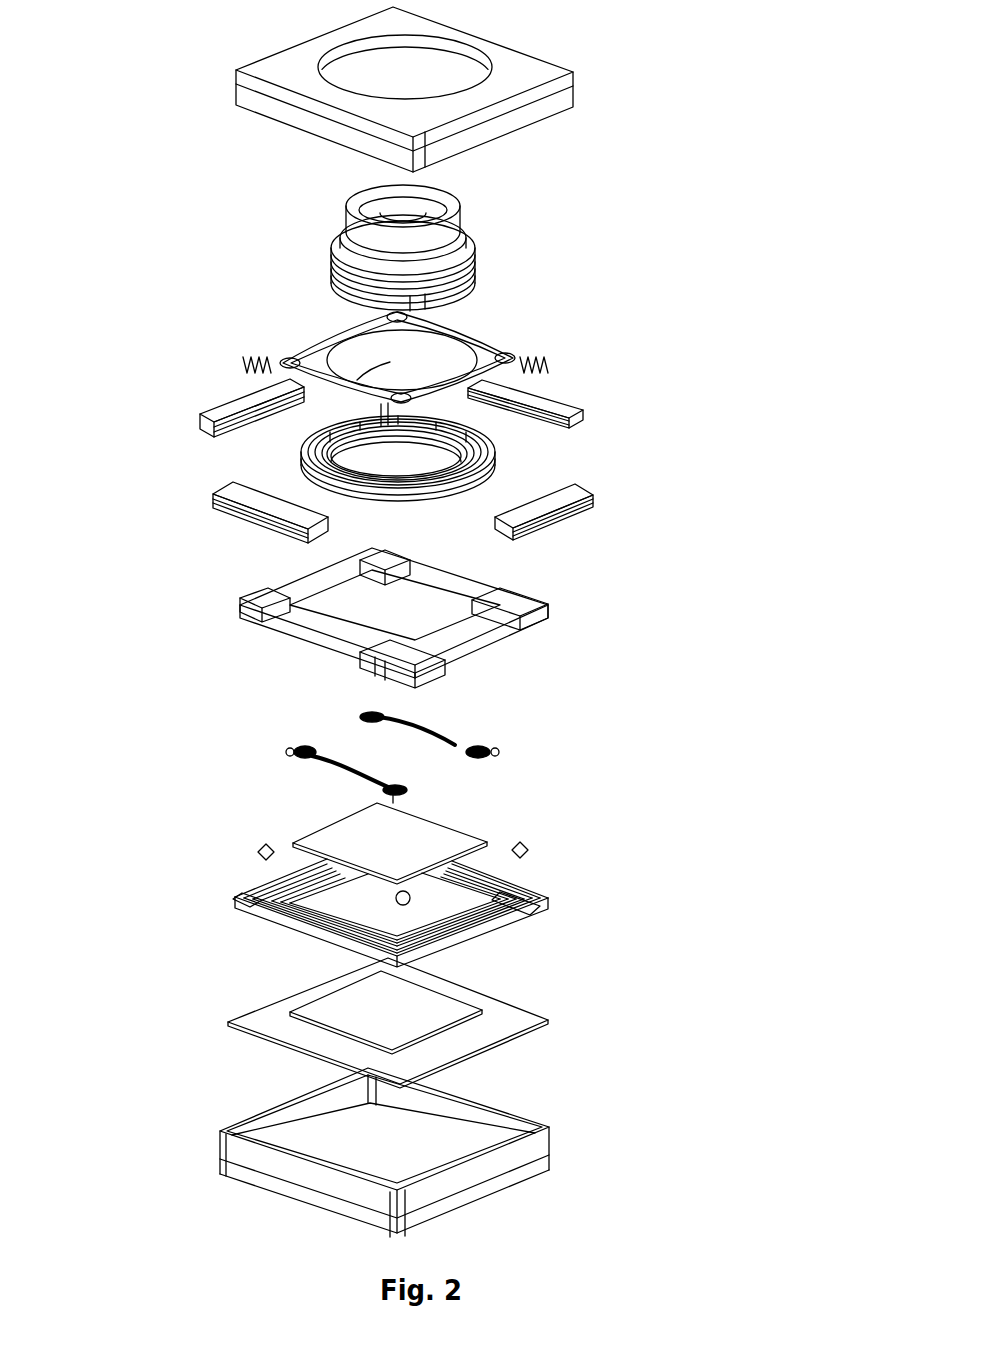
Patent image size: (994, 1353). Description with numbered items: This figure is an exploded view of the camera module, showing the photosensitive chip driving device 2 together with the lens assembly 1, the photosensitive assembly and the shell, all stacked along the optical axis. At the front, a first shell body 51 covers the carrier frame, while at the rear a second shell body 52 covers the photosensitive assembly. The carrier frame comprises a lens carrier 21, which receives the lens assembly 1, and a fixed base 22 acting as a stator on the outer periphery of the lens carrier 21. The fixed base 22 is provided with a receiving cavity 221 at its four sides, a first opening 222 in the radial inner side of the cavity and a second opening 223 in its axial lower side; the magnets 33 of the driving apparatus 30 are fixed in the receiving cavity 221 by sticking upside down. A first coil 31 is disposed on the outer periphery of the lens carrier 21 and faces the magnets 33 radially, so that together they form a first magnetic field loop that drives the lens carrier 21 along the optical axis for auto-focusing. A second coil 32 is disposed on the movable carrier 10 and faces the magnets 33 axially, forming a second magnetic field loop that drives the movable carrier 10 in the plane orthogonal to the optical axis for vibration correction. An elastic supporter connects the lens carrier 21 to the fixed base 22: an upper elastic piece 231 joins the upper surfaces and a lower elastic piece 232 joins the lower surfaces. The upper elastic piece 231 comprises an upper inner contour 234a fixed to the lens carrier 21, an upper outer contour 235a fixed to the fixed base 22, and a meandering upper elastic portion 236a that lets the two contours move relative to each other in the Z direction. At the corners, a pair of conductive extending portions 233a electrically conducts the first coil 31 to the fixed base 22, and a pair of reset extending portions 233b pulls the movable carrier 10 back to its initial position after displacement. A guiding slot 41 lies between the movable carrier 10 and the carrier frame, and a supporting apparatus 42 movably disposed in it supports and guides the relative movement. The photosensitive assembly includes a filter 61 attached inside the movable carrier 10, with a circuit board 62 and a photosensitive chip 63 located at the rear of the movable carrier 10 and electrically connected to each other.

The first shell body 51 is at (518, 70).
The lens assembly 1 is at (476, 250).
The upper elastic piece 231 is at (333, 336).
The reset extending portion 233b is at (408, 319).
The conductive extending portion 233a is at (473, 436).
The upper inner contour 234a is at (357, 380).
The upper outer contour 235a is at (300, 360).
The upper elastic portion 236a is at (240, 392).
The driving apparatus 30 is at (650, 462).
The first coil 31 is at (300, 464).
The magnets 33 is at (598, 506).
The lens carrier 21 is at (413, 500).
The fixed base 22 is at (475, 657).
The first opening 222 is at (453, 590).
The receiving cavity 221 is at (270, 639).
The second opening 223 is at (500, 690).
The lower elastic piece 232 is at (480, 755).
The filter 61 is at (357, 845).
The guiding slot 41 is at (252, 897).
The supporting apparatus 42 is at (532, 852).
The movable carrier 10 is at (505, 940).
The second coil 32 is at (315, 918).
The circuit board 62 is at (305, 1040).
The photosensitive chip 63 is at (410, 1018).
The second shell body 52 is at (485, 1177).
The photosensitive chip driving device 2 is at (693, 730).